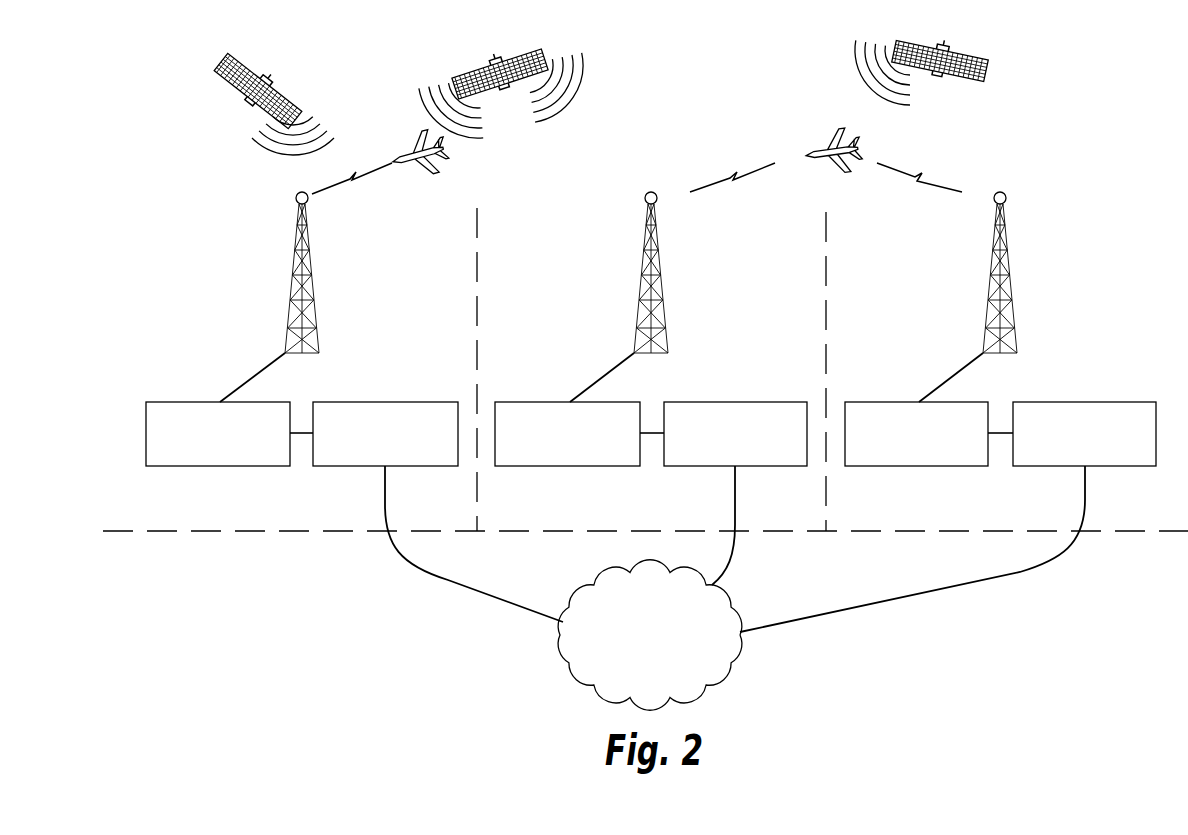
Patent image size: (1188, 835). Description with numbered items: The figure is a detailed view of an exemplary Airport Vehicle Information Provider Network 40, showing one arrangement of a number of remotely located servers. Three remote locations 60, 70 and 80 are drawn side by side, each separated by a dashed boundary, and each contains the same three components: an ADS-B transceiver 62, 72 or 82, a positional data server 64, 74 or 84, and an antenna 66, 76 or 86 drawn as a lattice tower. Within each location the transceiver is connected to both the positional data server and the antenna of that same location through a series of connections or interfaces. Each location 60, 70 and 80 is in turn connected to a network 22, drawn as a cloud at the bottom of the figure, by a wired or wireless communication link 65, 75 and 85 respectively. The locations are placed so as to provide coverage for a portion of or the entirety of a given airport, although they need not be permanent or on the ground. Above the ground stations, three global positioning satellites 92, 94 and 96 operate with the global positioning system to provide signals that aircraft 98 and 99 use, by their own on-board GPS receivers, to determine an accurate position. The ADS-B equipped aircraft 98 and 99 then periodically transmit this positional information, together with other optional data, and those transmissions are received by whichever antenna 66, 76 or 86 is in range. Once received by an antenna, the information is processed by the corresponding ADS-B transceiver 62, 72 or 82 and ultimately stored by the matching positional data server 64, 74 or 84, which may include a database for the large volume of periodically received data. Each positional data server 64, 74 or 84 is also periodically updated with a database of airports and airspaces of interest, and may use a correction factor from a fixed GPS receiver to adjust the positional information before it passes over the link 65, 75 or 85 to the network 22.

The network 22 is at (664, 668).
The Airport Vehicle Information Provider Network 40 is at (1035, 185).
The location 60 is at (308, 388).
The ADS-B transceiver 62 is at (146, 412).
The positional data server 64 is at (432, 400).
The link 65 is at (488, 596).
The antenna 66 is at (294, 263).
The location 70 is at (660, 388).
The ADS-B transceiver 72 is at (527, 400).
The positional data server 74 is at (753, 400).
The link 75 is at (735, 566).
The antenna 76 is at (645, 246).
The location 80 is at (1000, 391).
The ADS-B transceiver 82 is at (876, 400).
The positional data server 84 is at (1138, 400).
The link 85 is at (932, 598).
The antenna 86 is at (1014, 262).
The global positioning satellite 92 is at (224, 82).
The global positioning satellite 94 is at (482, 76).
The global positioning satellite 96 is at (936, 76).
The aircraft 98 is at (413, 172).
The aircraft 99 is at (833, 166).